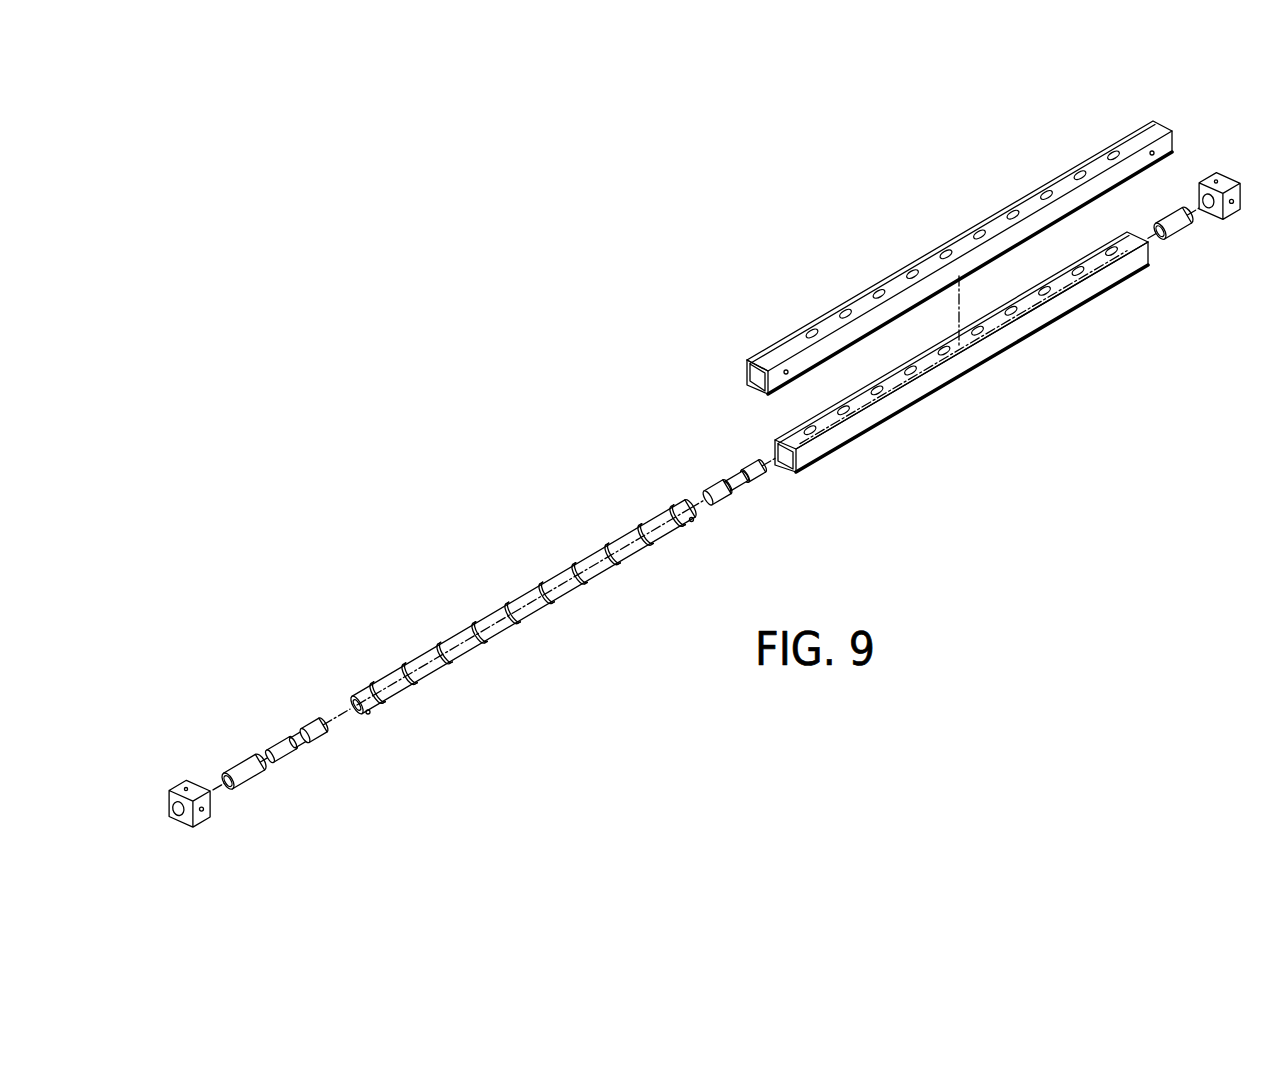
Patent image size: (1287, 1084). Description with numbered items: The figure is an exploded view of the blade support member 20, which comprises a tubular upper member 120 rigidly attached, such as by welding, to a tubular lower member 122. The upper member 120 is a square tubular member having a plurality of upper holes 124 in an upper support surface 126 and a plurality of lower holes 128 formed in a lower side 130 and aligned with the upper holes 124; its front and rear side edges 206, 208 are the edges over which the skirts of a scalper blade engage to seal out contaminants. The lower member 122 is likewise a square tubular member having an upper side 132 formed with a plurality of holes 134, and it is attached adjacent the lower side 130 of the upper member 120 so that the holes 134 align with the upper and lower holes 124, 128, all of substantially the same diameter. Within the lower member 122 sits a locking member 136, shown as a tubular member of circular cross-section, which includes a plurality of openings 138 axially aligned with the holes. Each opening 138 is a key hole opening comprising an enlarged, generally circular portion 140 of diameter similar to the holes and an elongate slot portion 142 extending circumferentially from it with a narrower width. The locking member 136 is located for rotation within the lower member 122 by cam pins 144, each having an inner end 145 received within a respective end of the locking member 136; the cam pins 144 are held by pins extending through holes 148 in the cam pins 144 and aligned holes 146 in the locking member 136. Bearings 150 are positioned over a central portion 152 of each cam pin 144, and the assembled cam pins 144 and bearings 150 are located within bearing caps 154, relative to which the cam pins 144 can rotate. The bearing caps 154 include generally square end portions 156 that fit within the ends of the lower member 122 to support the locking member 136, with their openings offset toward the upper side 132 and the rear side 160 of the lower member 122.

The blade support member 20 is at (688, 402).
The tubular upper member 120 is at (853, 290).
The tubular lower member 122 is at (929, 425).
The upper holes 124 is at (1027, 175).
The upper support surface 126 is at (1052, 185).
The lower holes 128 is at (945, 312).
The lower side 130 is at (749, 360).
The upper side 132 is at (999, 320).
The holes 134 is at (1005, 300).
The locking member 136 is at (552, 518).
The openings 138 is at (577, 578).
The circular portion 140 is at (490, 678).
The slot portion 142 is at (466, 680).
The cam pins 144 is at (710, 463).
The inner end 145 is at (706, 493).
The holes 146 is at (691, 522).
The holes 148 is at (724, 505).
The bearings 150 is at (1168, 212).
The central portion 152 is at (742, 492).
The bearing caps 154 is at (1214, 163).
The end portions 156 is at (1205, 222).
The rear side 160 is at (818, 454).
The front side edge 206 is at (753, 358).
The rear side edge 208 is at (823, 350).